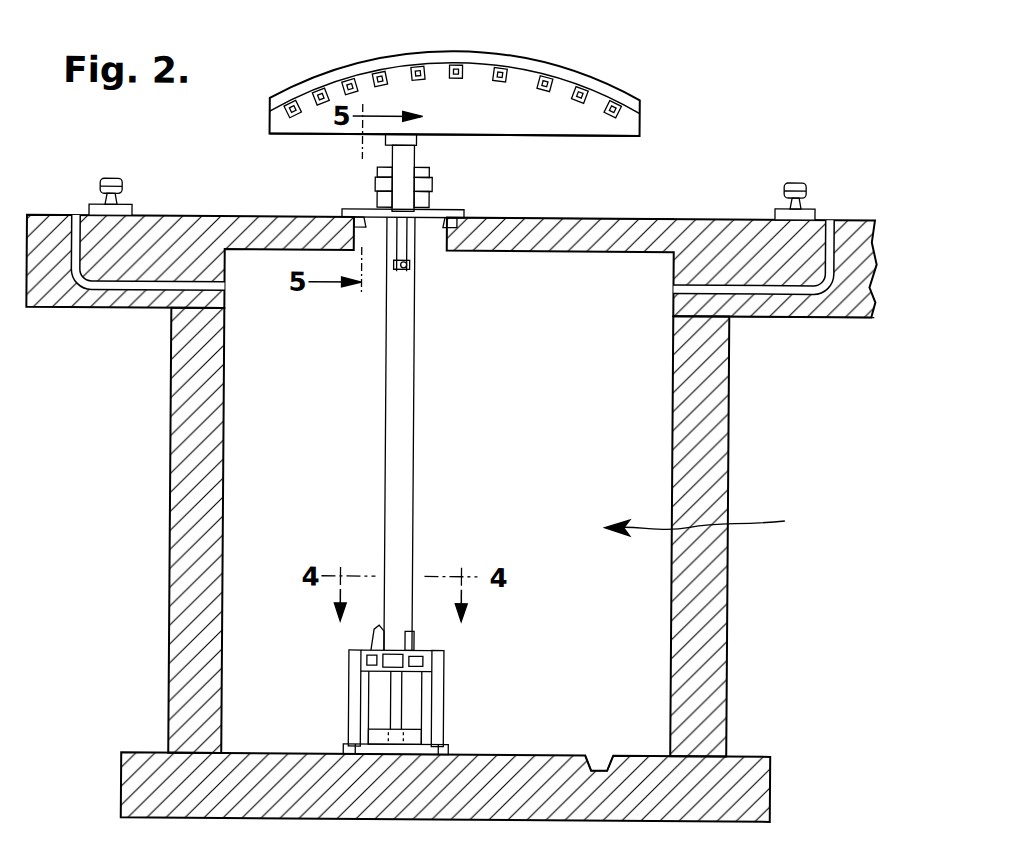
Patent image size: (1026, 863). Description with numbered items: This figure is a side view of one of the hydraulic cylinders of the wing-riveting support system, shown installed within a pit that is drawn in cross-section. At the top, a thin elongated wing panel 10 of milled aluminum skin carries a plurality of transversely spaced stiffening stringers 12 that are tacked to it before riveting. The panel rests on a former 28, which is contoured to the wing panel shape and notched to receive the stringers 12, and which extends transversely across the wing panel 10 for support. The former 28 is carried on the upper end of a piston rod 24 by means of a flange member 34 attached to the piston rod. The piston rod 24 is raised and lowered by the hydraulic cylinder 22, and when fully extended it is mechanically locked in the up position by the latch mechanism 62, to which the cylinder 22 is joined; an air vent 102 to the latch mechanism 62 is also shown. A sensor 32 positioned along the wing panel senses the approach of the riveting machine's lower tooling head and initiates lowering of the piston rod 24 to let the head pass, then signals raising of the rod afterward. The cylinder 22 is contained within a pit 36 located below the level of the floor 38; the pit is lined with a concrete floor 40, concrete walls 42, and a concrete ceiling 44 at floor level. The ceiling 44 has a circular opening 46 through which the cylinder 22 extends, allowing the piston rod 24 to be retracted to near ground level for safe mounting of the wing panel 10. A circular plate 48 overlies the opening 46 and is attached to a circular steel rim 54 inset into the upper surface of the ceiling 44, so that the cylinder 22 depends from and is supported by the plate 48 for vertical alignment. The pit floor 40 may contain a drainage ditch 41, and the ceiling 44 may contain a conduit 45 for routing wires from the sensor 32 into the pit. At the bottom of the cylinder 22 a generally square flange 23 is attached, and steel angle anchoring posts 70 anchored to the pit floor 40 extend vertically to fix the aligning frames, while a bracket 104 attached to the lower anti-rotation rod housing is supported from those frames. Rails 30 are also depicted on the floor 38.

The wing panel 10 is at (572, 72).
The stiffening stringers 12 is at (290, 102).
The hydraulic cylinder 22 is at (413, 352).
The square flange 23 is at (416, 644).
The piston rod 24 is at (413, 152).
The former 28 is at (590, 136).
The rails 30 is at (109, 181).
The sensor 32 is at (72, 218).
The flange member 34 is at (385, 139).
The pit 36 is at (710, 522).
The floor 38 is at (720, 218).
The concrete floor 40 is at (760, 755).
The drainage ditch 41 is at (598, 756).
The concrete walls 42 is at (728, 568).
The concrete ceiling 44 is at (612, 218).
The conduit 45 is at (775, 316).
The circular opening 46 is at (446, 229).
The circular plate 48 is at (437, 210).
The circular steel rim 54 is at (460, 220).
The latch mechanism 62 is at (375, 200).
The anchoring posts 70 is at (350, 695).
The air vent 102 is at (408, 267).
The bracket 104 is at (382, 632).